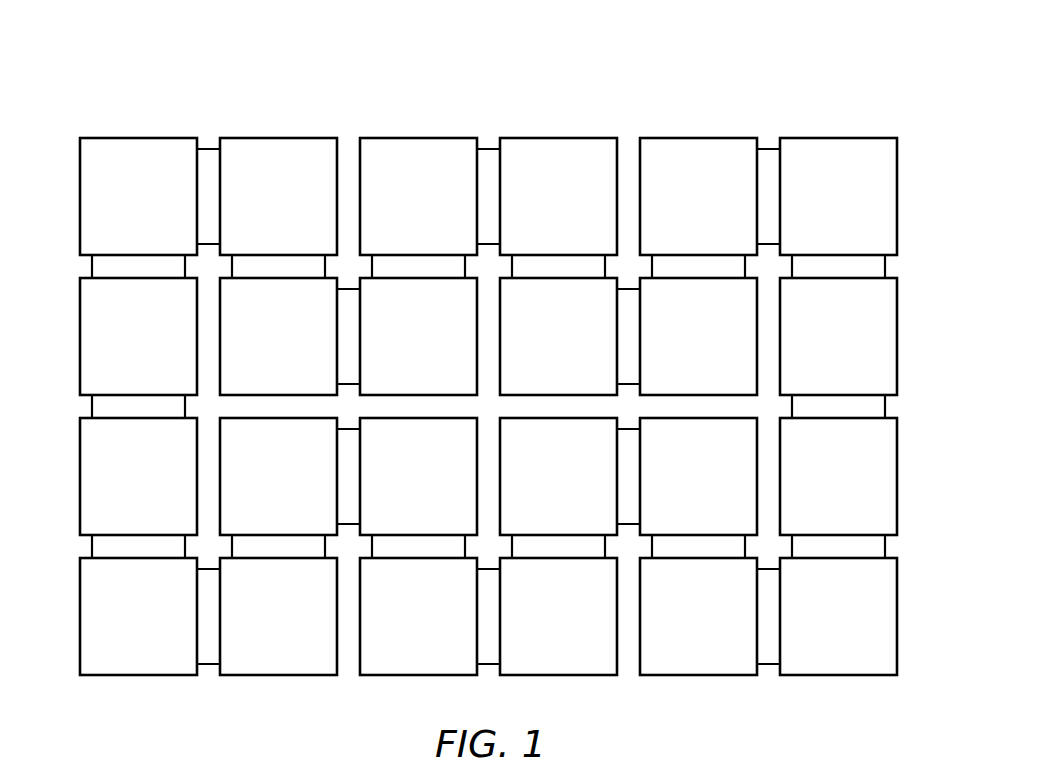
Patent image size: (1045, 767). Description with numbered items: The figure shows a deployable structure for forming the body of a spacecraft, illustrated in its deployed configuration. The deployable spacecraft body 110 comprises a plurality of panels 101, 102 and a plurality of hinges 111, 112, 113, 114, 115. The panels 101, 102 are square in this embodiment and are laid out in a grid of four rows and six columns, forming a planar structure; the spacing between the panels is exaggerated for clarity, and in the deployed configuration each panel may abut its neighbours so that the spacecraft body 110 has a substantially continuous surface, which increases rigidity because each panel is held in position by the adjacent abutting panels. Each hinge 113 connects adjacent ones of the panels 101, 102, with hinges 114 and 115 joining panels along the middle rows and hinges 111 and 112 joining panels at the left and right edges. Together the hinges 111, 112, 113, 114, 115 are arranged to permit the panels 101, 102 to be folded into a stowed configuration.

The deployable spacecraft body 110 is at (752, 74).
The panel 101 is at (417, 138).
The panel 102 is at (557, 138).
The hinge 111 is at (92, 406).
The hinge 112 is at (887, 406).
The hinge 113 is at (489, 149).
The hinge 114 is at (347, 289).
The hinge 115 is at (347, 524).